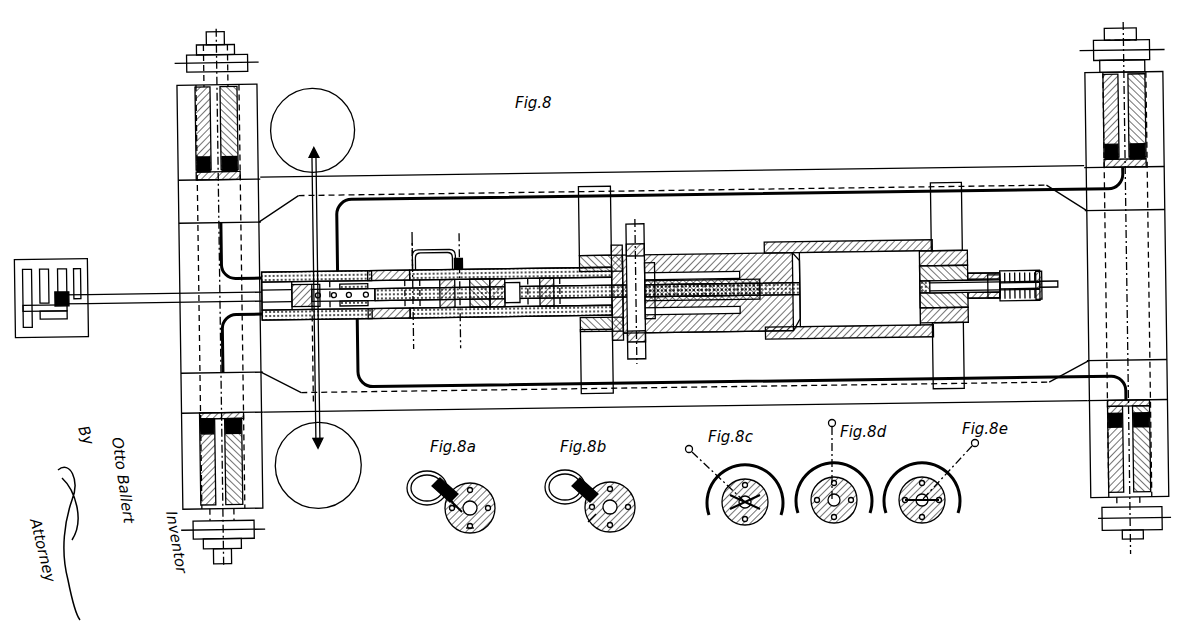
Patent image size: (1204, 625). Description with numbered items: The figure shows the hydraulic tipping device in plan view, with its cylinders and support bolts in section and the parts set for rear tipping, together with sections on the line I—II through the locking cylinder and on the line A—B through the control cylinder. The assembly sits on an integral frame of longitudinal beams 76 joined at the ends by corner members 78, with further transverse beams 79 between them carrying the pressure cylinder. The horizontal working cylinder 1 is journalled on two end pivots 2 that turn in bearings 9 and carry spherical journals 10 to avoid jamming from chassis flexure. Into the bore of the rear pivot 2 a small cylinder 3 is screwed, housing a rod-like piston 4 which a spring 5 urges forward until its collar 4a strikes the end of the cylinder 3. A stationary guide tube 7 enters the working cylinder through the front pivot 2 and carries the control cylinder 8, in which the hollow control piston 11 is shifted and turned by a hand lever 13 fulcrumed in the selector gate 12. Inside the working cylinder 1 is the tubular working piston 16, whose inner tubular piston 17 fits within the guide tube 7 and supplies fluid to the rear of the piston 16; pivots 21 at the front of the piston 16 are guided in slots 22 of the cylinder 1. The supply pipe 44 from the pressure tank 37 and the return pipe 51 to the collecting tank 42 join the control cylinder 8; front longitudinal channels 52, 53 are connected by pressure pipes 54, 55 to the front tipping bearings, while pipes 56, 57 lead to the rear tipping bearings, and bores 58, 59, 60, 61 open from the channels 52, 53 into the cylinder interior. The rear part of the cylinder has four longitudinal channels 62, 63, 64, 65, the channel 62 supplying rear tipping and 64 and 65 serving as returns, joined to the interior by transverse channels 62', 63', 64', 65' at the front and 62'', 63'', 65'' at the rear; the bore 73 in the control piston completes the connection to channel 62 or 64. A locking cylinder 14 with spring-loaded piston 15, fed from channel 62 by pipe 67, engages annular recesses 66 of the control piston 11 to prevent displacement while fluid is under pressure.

In FIG. 8, the working cylinder 1 is at (860, 245).
In FIG. 8, the pivot 2 is at (970, 274).
In FIG. 8, the small cylinder 3 is at (1040, 288).
In FIG. 8, the piston 4 is at (1050, 298).
In FIG. 8, the collar 4a is at (990, 300).
In FIG. 8, the spring 5 is at (1015, 280).
In FIG. 8, the guide tube 7 is at (650, 328).
In FIG. 8, the control cylinder 8 is at (512, 275).
In FIG. 8, the bearing 9 is at (590, 248).
In FIG. 8, the spherical journal 10 is at (585, 260).
In FIG. 8, the control piston 11 is at (378, 281).
In FIG. 8, the selector plate 12 is at (80, 268).
In FIG. 8, the hand-operated lever 13 is at (65, 296).
In FIG. 8, the locking cylinder 14 is at (457, 253).
In FIG. 8A, the locking cylinder 14 is at (456, 483).
In FIG. 8B, the locking cylinder 14 is at (592, 484).
In FIG. 8A, the spring loaded piston 15 is at (488, 496).
In FIG. 8B, the spring loaded piston 15 is at (630, 492).
In FIG. 8, the working piston 16 is at (735, 253).
In FIG. 8, the tubular piston 17 is at (690, 262).
In FIG. 8, the pivot 21 is at (640, 236).
In FIG. 8, the slot 22 is at (742, 333).
In FIG. 8, the pressure-tank 37 is at (312, 130).
In FIG. 8, the collecting-tank 42 is at (318, 465).
In FIG. 8, the pressure supply pipe 44 is at (322, 180).
In FIG. 8, the return pipe 51 is at (318, 352).
In FIG. 8, the longitudinal channel 52 is at (298, 306).
In FIG. 8, the longitudinal channel 53 is at (277, 252).
In FIG. 8, the pressure pipe 54 is at (218, 331).
In FIG. 8, the pressure pipe 55 is at (218, 236).
In FIG. 8, the pressure pipe 56 is at (358, 367).
In FIG. 8, the pressure pipe 57 is at (341, 211).
In FIG. 8, the bore 58 is at (342, 309).
In FIG. 8, the bore 59 is at (395, 310).
In FIG. 8, the bore 60 is at (318, 274).
In FIG. 8, the bore 61 is at (366, 267).
In FIG. 8, the longitudinal channel 62 is at (469, 278).
In FIG. 8A, the longitudinal channel 62 is at (438, 517).
In FIG. 8E, the longitudinal channel 62 is at (906, 516).
In FIG. 8, the transverse channel 62' is at (433, 250).
In FIG. 8C, the transverse channel 62' is at (724, 510).
In FIG. 8, the transverse channel 62'' is at (547, 269).
In FIG. 8, the longitudinal channel 63 is at (493, 311).
In FIG. 8A, the longitudinal channel 63 is at (482, 509).
In FIG. 8, the transverse channel 63' is at (400, 322).
In FIG. 8C, the transverse channel 63' is at (764, 511).
In FIG. 8, the transverse channel 63'' is at (545, 327).
In FIG. 8A, the longitudinal channel 64 is at (471, 542).
In FIG. 8C, the longitudinal channel 64 is at (738, 541).
In FIG. 8, the transverse channel 64' is at (524, 352).
In FIG. 8C, the transverse channel 64' is at (762, 520).
In FIG. 8A, the longitudinal channel 65 is at (483, 486).
In FIG. 8, the transverse channel 65' is at (432, 311).
In FIG. 8C, the transverse channel 65' is at (743, 481).
In FIG. 8, the transverse channel 65'' is at (522, 310).
In FIG. 8B, the annular recess 66 is at (596, 520).
In FIG. 8, the pipe 67 is at (462, 252).
In FIG. 8A, the pipe 67 is at (410, 498).
In FIG. 8C, the bore 73 is at (735, 515).
In FIG. 8D, the bore 73 is at (830, 520).
In FIG. 8E, the bore 73 is at (918, 520).
In FIG. 8, the longitudinal beam 76 is at (548, 172).
In FIG. 8, the corner member 78 is at (183, 197).
In FIG. 8, the transverse beam 79 is at (603, 184).
In FIG. 8, the section line A is at (409, 278).
In FIG. 8, the section line B is at (419, 354).
In FIG. 8, the section line I is at (455, 279).
In FIG. 8, the section line II is at (452, 354).